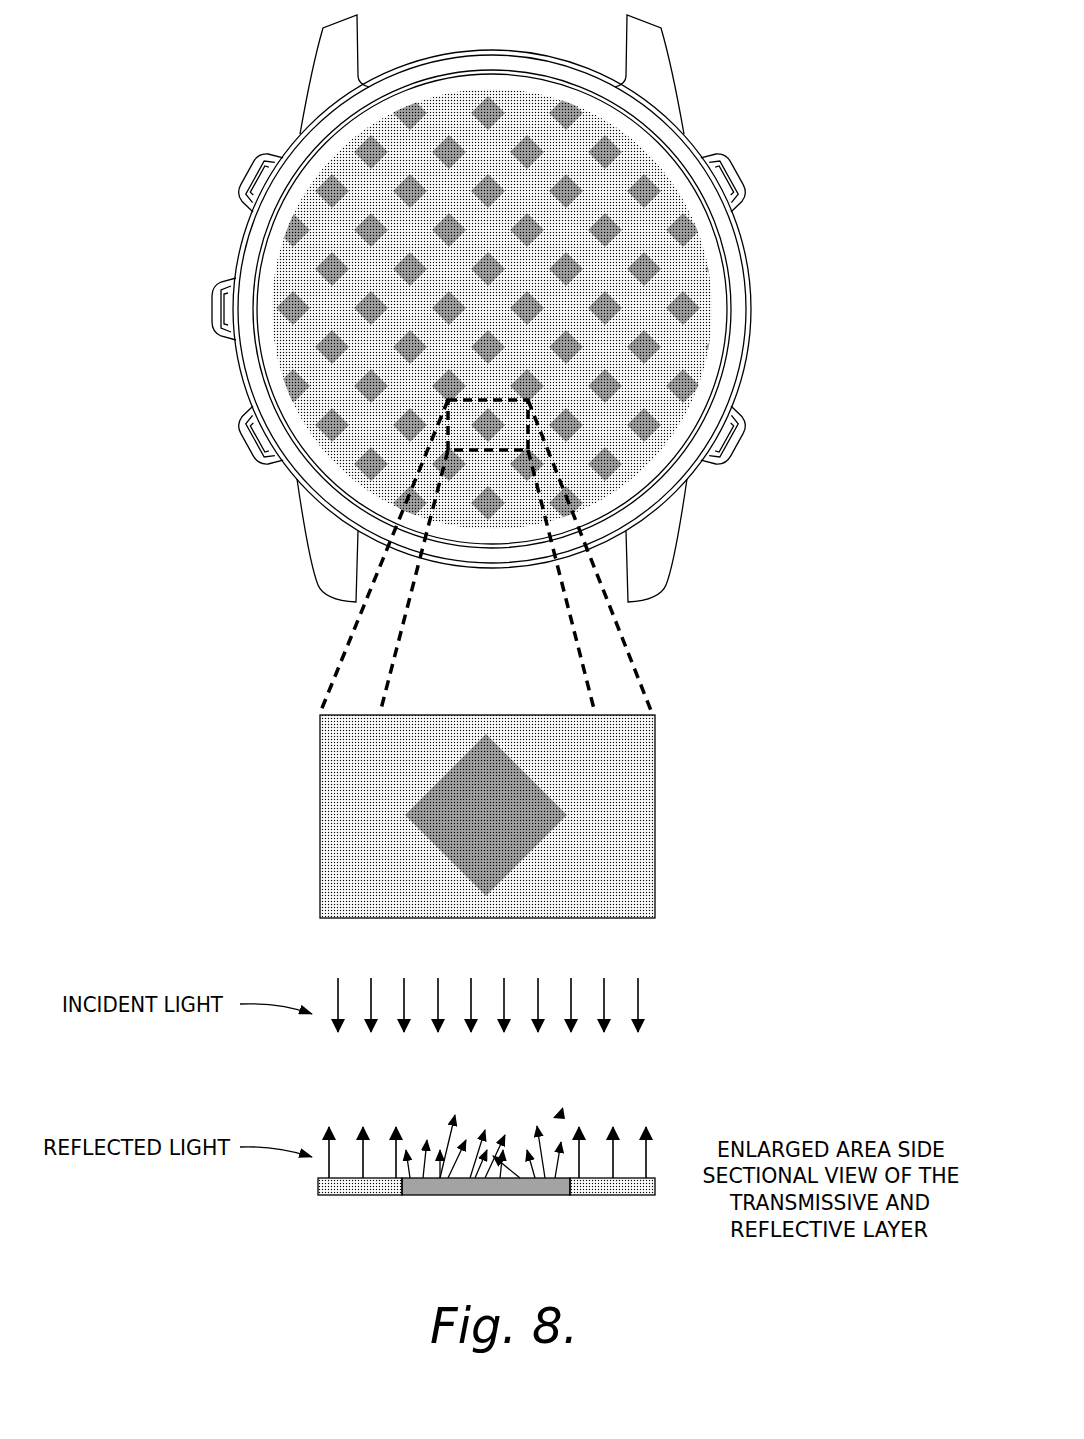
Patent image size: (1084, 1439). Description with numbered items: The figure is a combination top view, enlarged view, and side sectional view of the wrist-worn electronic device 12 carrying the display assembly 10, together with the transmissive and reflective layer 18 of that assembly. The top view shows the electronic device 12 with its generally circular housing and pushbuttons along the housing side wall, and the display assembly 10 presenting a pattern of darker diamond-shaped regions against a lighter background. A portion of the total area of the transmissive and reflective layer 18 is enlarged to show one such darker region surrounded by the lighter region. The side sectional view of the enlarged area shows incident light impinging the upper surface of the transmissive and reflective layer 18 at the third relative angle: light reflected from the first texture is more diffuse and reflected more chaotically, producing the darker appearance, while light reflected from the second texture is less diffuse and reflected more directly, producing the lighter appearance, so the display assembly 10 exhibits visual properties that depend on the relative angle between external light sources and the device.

The wrist-worn electronic device 12 is at (518, 304).
The display assembly 10 is at (512, 309).
The transmissive and reflective layer 18 is at (469, 1235).